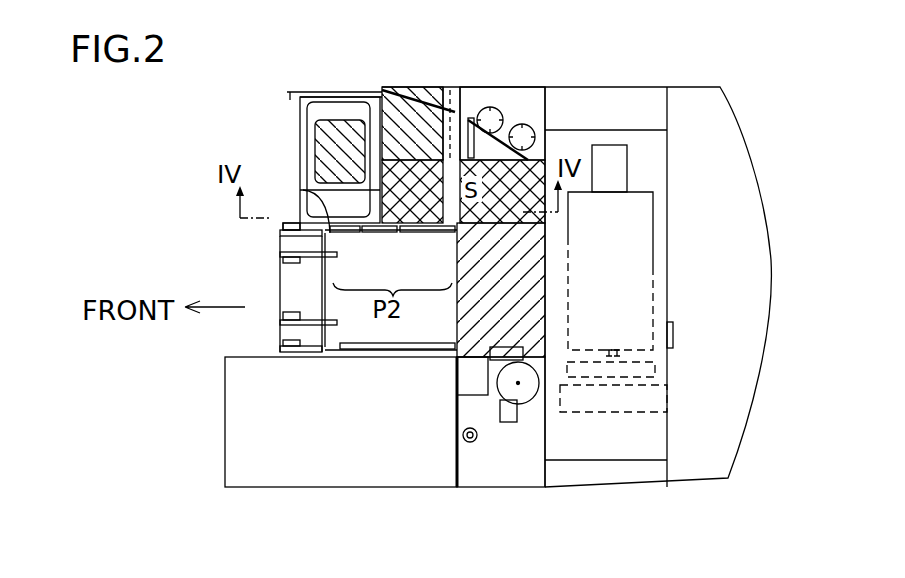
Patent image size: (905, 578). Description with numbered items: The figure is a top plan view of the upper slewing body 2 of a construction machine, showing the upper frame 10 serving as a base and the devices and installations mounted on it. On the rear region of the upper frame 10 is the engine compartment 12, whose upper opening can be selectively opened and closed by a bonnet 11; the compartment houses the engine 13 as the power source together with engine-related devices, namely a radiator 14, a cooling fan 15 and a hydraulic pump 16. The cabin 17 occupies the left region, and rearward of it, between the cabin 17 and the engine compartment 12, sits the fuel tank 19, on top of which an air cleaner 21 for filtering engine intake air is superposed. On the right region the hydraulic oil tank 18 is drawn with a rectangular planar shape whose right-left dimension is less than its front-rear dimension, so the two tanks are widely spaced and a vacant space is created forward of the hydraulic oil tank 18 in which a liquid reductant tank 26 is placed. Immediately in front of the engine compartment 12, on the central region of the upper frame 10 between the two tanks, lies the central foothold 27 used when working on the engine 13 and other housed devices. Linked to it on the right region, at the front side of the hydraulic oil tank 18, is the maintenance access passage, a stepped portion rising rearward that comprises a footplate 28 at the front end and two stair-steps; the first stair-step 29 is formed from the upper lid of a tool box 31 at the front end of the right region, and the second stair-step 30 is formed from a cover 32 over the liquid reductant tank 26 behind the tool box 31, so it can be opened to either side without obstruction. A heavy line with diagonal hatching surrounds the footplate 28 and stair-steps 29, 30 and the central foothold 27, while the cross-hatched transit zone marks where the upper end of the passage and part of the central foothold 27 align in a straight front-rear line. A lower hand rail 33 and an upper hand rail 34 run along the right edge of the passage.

The upper slewing body 2 is at (600, 492).
The upper frame 10 is at (277, 275).
The bonnet 11 is at (657, 278).
The engine compartment 12 is at (657, 168).
The engine 13 is at (548, 230).
The radiator 14 is at (628, 414).
The cooling fan 15 is at (656, 367).
The hydraulic pump 16 is at (640, 140).
The cabin 17 is at (320, 488).
The hydraulic oil tank 18 is at (514, 92).
The fuel tank 19 is at (497, 488).
The air cleaner 21 is at (483, 395).
The liquid reductant tank 26 is at (412, 88).
The central foothold 27 is at (548, 288).
The footplate 28 is at (325, 232).
The first stair-step 29 is at (370, 233).
The second stair-step 30 is at (433, 234).
The tool box 31 is at (336, 94).
The cover 32 is at (384, 88).
The lower hand rail 33 is at (289, 90).
The upper hand rail 34 is at (468, 114).